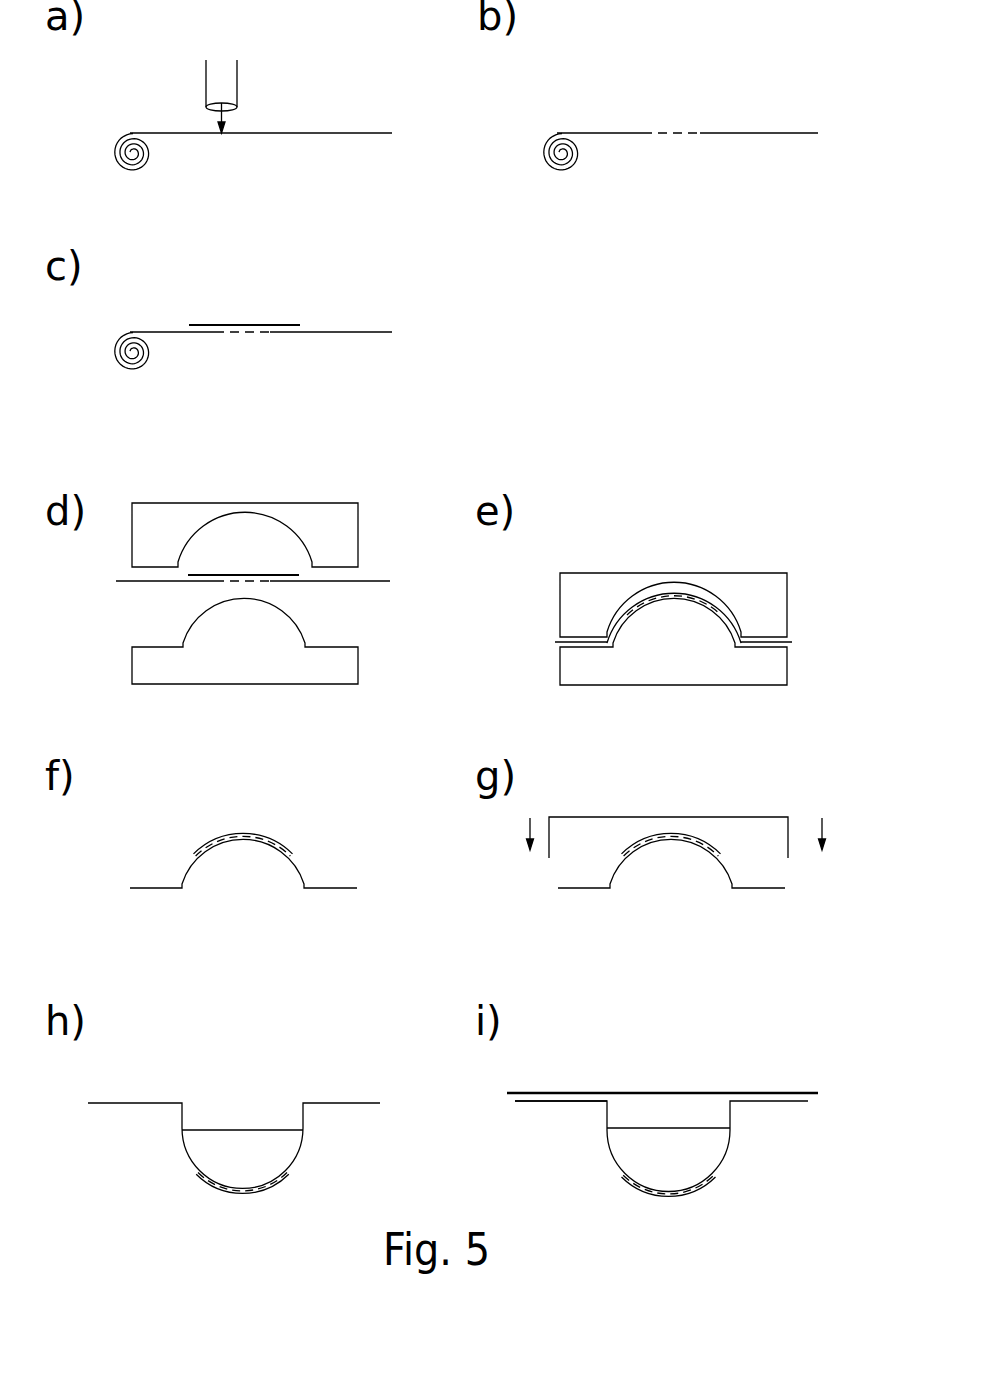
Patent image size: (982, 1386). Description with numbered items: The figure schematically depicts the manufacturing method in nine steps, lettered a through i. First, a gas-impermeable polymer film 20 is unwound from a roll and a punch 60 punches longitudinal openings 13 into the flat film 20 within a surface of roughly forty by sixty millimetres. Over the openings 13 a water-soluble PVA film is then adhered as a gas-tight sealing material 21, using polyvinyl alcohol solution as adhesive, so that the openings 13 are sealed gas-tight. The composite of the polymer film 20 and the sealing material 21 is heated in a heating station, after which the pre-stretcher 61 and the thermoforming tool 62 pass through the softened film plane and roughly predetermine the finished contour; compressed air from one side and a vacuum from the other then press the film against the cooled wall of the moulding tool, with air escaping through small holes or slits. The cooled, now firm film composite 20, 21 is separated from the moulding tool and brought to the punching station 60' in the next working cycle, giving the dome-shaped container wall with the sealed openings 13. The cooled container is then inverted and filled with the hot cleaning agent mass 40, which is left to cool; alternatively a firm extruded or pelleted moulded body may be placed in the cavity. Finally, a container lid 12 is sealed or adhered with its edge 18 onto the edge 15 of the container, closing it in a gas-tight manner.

The polymer film 20 is at (141, 95).
The punch 60 is at (258, 93).
The openings 13 is at (694, 117).
The sealing material 21 is at (245, 323).
The thermoforming tool 62 is at (318, 541).
The pre-stretcher 61 is at (229, 652).
The punching station 60' is at (676, 804).
The cleaning agent mass 40 is at (226, 1170).
The edge of the container lid 18 is at (547, 1078).
The container lid 12 is at (721, 1090).
The edge of the container 15 is at (537, 1115).